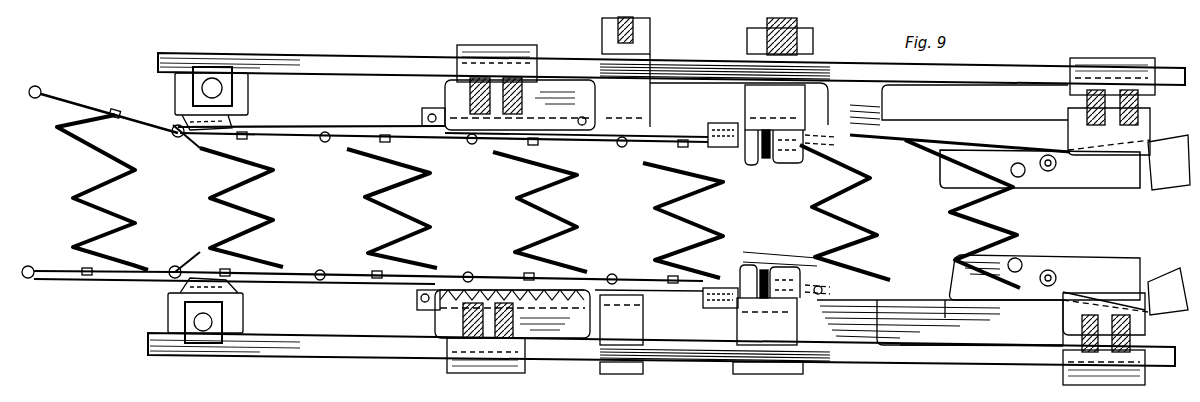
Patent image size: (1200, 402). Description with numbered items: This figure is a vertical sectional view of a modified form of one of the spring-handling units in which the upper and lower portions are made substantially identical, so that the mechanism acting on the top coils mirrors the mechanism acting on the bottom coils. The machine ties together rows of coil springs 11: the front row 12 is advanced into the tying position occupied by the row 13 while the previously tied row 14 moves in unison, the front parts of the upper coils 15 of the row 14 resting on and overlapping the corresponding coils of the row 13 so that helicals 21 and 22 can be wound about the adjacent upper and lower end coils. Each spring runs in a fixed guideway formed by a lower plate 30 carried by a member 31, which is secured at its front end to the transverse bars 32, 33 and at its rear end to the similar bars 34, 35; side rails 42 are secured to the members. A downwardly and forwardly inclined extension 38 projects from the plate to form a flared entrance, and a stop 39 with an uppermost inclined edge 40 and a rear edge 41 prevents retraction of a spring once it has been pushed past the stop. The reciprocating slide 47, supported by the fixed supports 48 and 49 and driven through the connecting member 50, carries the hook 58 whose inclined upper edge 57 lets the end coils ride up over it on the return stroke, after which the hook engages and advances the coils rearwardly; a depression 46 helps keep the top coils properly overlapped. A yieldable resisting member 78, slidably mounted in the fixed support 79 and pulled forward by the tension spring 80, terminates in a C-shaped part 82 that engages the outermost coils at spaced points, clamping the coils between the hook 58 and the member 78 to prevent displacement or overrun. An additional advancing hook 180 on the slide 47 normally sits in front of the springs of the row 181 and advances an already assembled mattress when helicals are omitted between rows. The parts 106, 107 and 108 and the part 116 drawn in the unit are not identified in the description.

The row of coil springs 11 is at (963, 196).
The front row 12 is at (1010, 226).
The added front row 13 is at (866, 220).
The tied row 14 is at (704, 218).
The upper coils 15 is at (85, 110).
The helical 21 is at (620, 148).
The helical 22 is at (613, 273).
The lower plate 30 is at (955, 300).
The member 31 is at (1008, 308).
The transversely extending bar 32 is at (1078, 336).
The transversely extending bar 33 is at (1132, 342).
The bar 34 is at (462, 320).
The bar 35 is at (510, 332).
The inclined extension 38 is at (1169, 225).
The stop 39 is at (1098, 150).
The inclined edge 40 is at (1080, 292).
The rear edge 41 is at (1067, 115).
The side rail 42 is at (914, 172).
The depression 46 is at (940, 321).
The slide 47 is at (385, 61).
The fixed support 48 is at (1103, 57).
The fixed support 49 is at (490, 46).
The connecting member 50 is at (216, 70).
The inclined upper edge 57 is at (808, 262).
The hook 58 is at (832, 140).
The resisting member 78 is at (650, 288).
The fixed support 79 is at (596, 97).
The tension spring 80 is at (482, 288).
The C-shaped part 82 is at (722, 147).
The clamp jaw 106 is at (793, 165).
The clamp jaw 107 is at (747, 166).
The clamp post 108 is at (766, 160).
The plate 116 is at (651, 98).
The advancing hook 180 is at (196, 142).
The row 181 is at (262, 215).